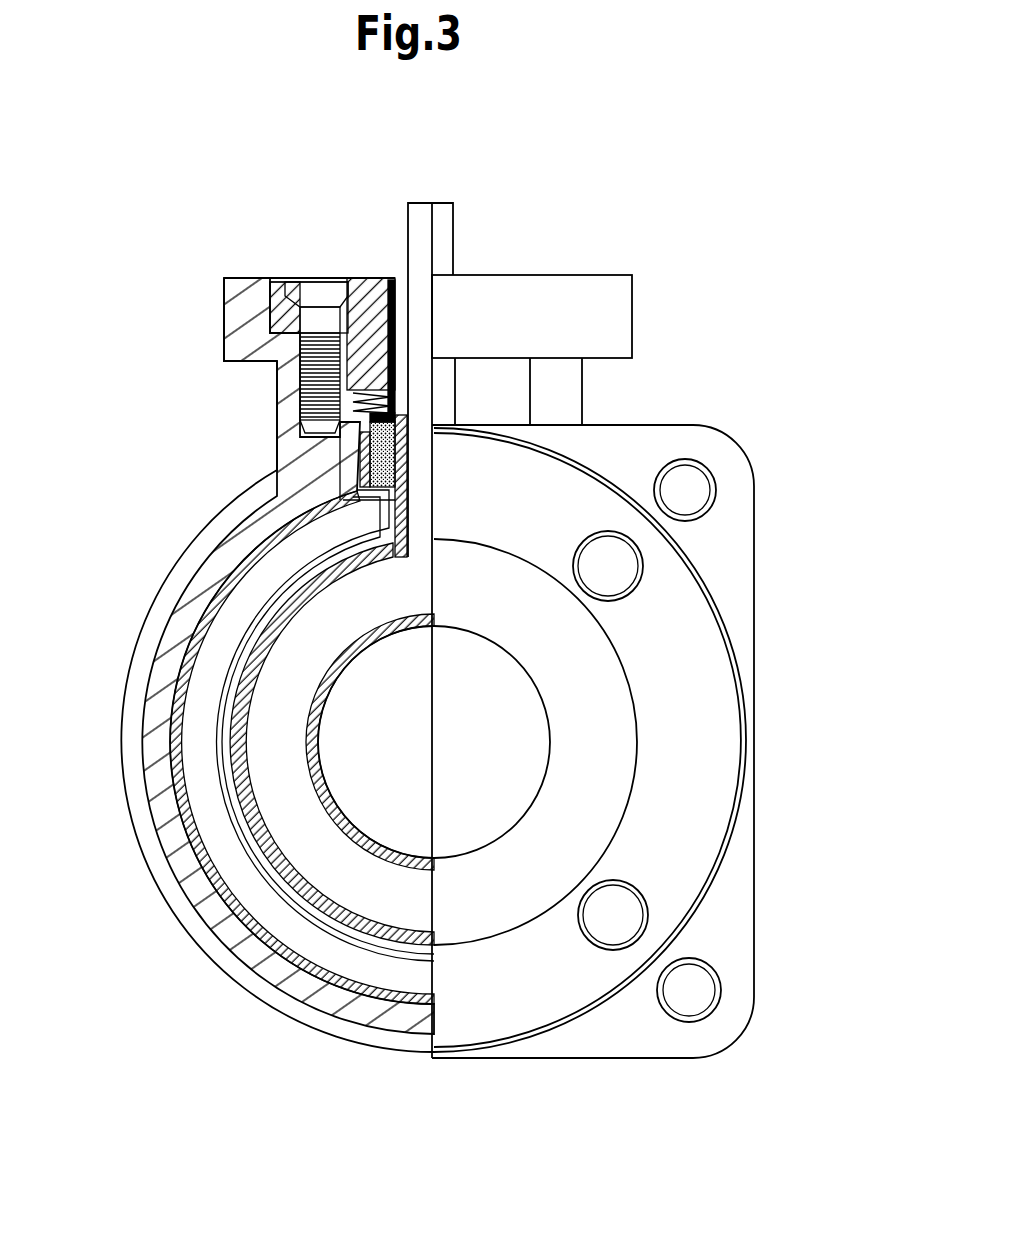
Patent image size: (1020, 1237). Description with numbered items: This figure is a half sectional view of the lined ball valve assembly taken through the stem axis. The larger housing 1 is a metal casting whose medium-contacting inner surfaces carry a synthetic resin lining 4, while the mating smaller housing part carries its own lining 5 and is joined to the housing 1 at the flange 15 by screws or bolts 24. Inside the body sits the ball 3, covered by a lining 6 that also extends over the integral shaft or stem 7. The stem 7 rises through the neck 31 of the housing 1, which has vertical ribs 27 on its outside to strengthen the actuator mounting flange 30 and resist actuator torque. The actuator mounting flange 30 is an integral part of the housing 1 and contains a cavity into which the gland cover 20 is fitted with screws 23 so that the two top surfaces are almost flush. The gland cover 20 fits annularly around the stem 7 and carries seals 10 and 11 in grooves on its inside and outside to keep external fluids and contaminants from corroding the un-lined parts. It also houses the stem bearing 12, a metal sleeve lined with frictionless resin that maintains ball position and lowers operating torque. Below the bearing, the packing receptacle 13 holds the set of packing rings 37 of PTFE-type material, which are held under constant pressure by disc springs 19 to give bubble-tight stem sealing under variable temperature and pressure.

The housing 1 is at (197, 585).
The ball 3 is at (265, 773).
The lining 4 is at (185, 678).
The lining 5 is at (502, 590).
The lining of the ball-stem 6 is at (262, 838).
The shaft/stem 7 is at (420, 226).
The seal 10 is at (388, 288).
The seal 11 is at (342, 298).
The stem bearing 12 is at (398, 362).
The packing receptacle 13 is at (360, 459).
The flange 15 is at (728, 548).
The disc springs 19 is at (363, 402).
The gland cover 20 is at (367, 292).
The screws 23 is at (308, 293).
The screws/bolts 24 is at (685, 490).
The vertical ribs 27 is at (568, 386).
The actuator mounting flange 30 is at (243, 303).
The neck 31 is at (342, 449).
The seal rings/packing rings 37 is at (365, 483).